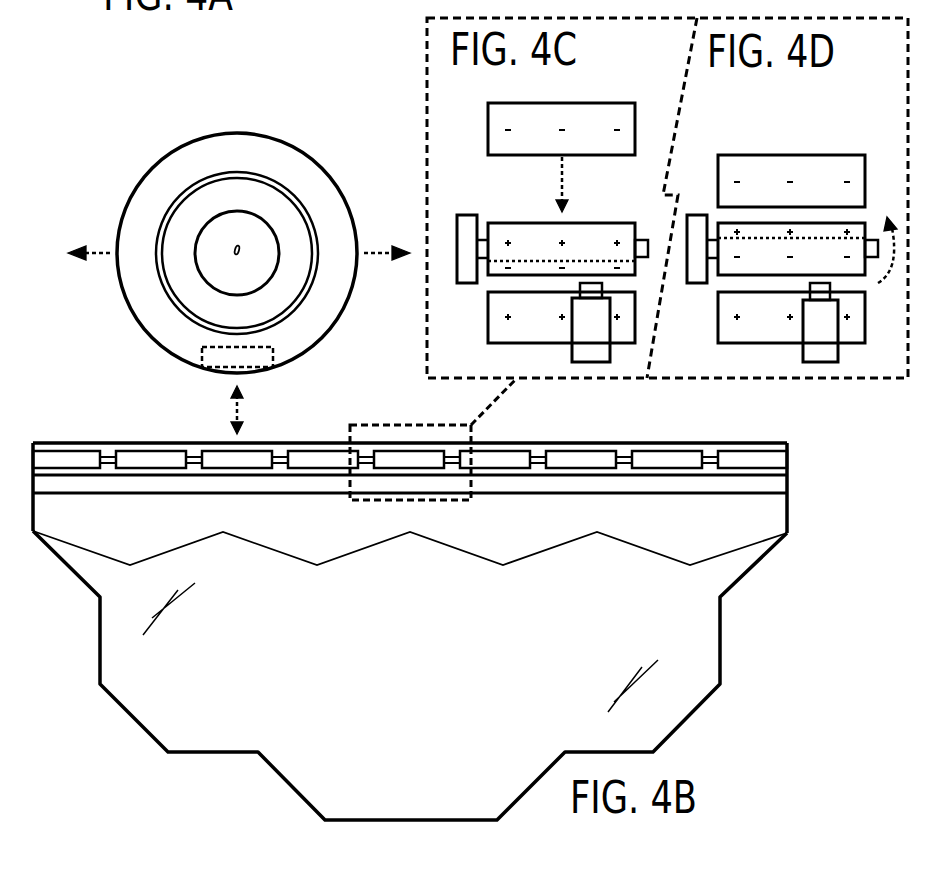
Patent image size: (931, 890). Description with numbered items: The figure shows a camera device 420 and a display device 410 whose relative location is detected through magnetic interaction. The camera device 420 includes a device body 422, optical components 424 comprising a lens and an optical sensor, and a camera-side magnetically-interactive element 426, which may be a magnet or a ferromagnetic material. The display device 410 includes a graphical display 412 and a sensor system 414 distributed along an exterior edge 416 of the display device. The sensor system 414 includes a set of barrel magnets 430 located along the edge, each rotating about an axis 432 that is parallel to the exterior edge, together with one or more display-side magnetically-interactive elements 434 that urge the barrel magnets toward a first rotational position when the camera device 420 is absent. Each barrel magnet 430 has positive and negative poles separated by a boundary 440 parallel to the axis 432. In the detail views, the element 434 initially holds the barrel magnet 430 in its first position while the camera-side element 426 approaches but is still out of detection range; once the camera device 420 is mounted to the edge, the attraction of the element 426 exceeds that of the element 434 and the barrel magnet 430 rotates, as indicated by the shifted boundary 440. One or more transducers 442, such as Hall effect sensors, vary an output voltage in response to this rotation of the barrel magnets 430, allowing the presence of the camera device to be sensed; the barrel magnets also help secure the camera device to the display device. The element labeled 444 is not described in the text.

In FIG. 4B, the display device 410 is at (133, 442).
In FIG. 4B, the graphical display 412 is at (215, 752).
In FIG. 4B, the sensor system 414 is at (797, 455).
In FIG. 4B, the exterior edge 416 is at (706, 442).
In FIG. 4B, the camera device 420 is at (323, 172).
In FIG. 4B, the device body 422 is at (343, 223).
In FIG. 4B, the optical components 424 is at (215, 240).
In FIG. 4B, the camera-side magnetically-interactive element 426 is at (216, 356).
In FIG. 4C, the camera-side magnetically-interactive element 426 is at (600, 147).
In FIG. 4D, the camera-side magnetically-interactive element 426 is at (822, 167).
In FIG. 4B, the barrel magnet 430 is at (401, 455).
In FIG. 4C, the barrel magnet 430 is at (595, 235).
In FIG. 4D, the barrel magnet 430 is at (853, 226).
In FIG. 4B, the axis 432 is at (365, 456).
In FIG. 4C, the axis 432 is at (485, 240).
In FIG. 4D, the axis 432 is at (714, 240).
In FIG. 4B, the display-side magnetically-interactive element 434 is at (366, 500).
In FIG. 4C, the display-side magnetically-interactive element 434 is at (507, 334).
In FIG. 4D, the display-side magnetically-interactive element 434 is at (737, 334).
In FIG. 4C, the boundary 440 is at (529, 261).
In FIG. 4D, the boundary 440 is at (807, 238).
In FIG. 4C, the transducer 442 is at (583, 343).
In FIG. 4D, the transducer 442 is at (813, 343).
In FIG. 4C, the end element 444 is at (467, 277).
In FIG. 4D, the end element 444 is at (697, 277).